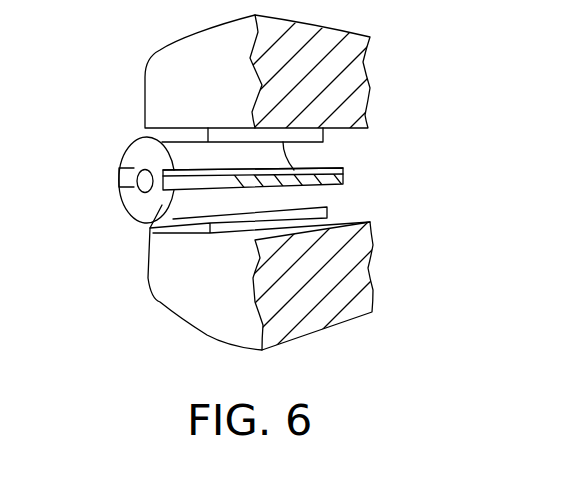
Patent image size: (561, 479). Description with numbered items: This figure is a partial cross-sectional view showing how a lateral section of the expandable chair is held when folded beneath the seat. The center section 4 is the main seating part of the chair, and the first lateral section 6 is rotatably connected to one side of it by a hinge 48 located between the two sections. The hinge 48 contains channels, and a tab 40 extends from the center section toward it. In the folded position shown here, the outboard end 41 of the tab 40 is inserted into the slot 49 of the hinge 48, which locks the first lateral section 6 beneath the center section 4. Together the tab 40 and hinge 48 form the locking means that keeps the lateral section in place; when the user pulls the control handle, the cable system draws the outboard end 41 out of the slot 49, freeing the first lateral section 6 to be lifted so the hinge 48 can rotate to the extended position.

The center section 4 is at (212, 67).
The first lateral section 6 is at (203, 301).
The tab 40 is at (345, 175).
The outboard end 41 is at (153, 228).
The hinge 48 is at (138, 158).
The slot 49 is at (297, 169).